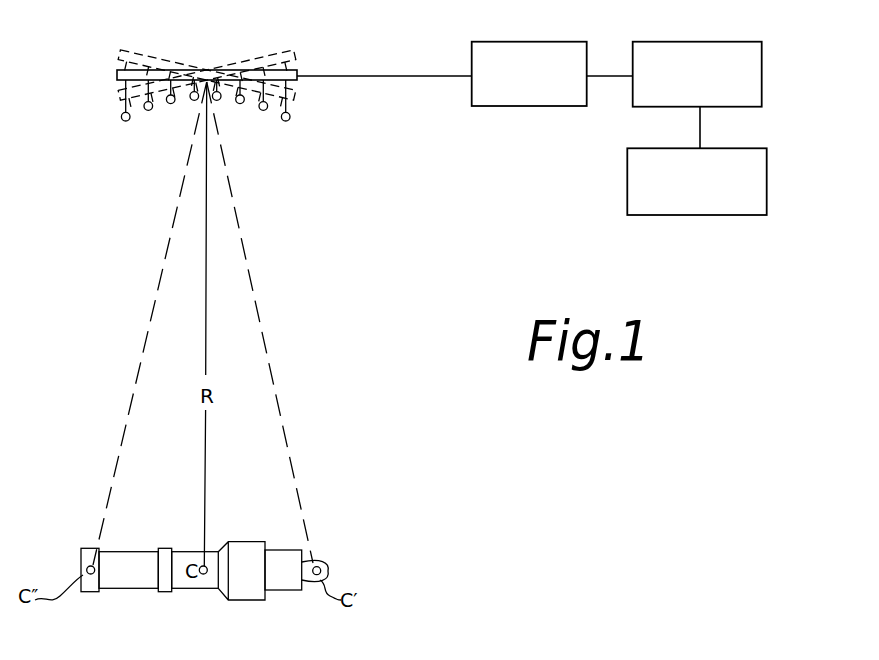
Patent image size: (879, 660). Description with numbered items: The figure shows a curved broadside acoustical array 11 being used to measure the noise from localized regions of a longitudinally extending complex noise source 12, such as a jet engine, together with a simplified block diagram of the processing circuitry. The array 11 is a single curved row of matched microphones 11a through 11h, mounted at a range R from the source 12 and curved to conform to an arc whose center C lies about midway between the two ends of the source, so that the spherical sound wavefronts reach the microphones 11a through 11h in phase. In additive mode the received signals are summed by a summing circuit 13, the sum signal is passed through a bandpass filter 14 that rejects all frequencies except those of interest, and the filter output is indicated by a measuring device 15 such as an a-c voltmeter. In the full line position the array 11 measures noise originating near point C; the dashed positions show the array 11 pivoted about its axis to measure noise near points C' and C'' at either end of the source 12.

The curved broadside acoustical array 11 is at (197, 111).
The microphone 11a is at (122, 118).
The microphone 11h is at (289, 119).
The extended noise source 12 is at (247, 592).
The summing circuit 13 is at (557, 45).
The bandpass filter 14 is at (728, 47).
The measuring device 15 is at (748, 150).